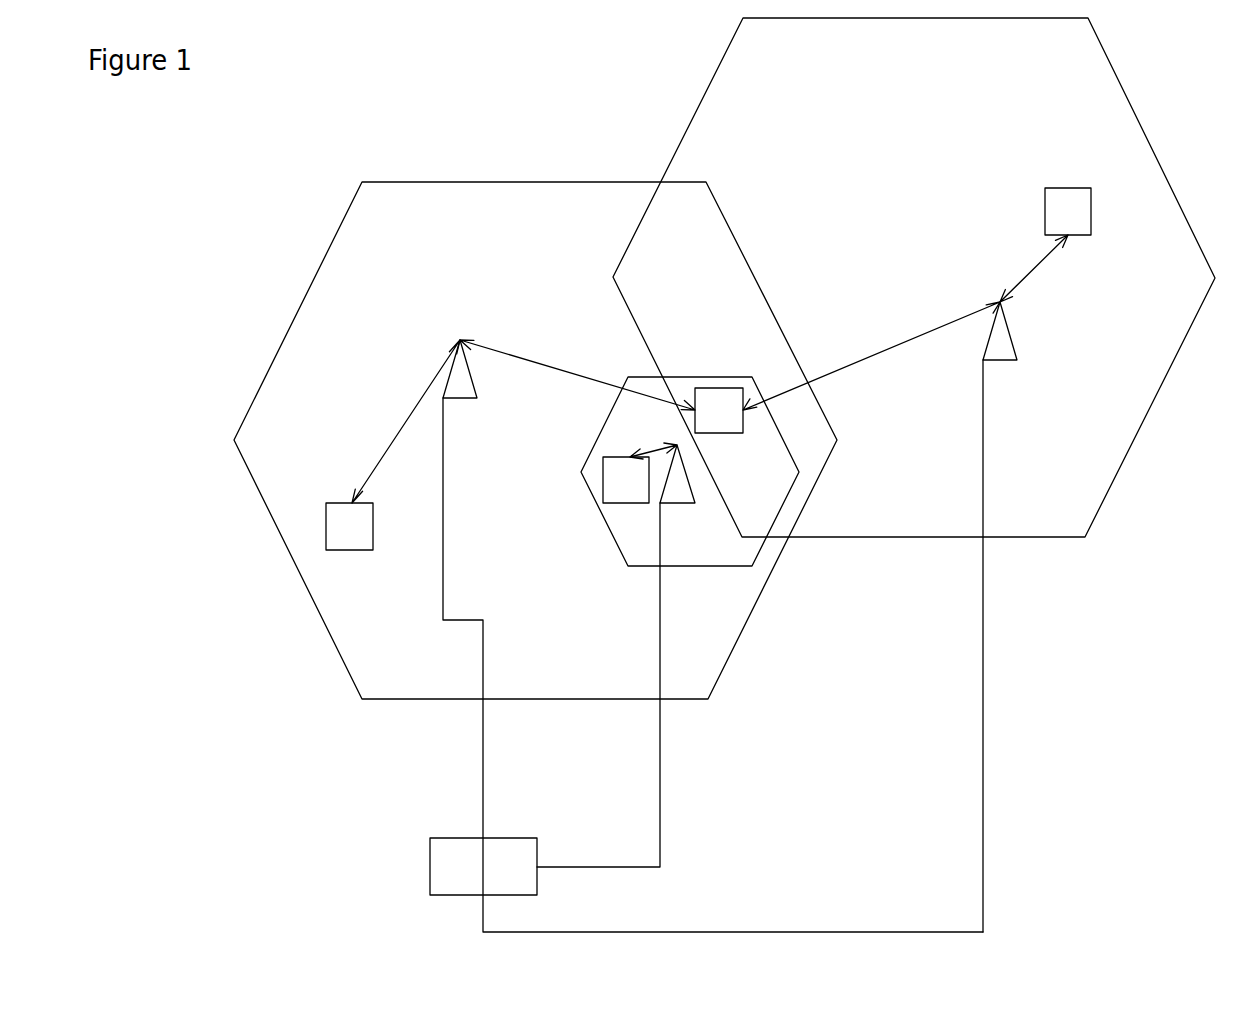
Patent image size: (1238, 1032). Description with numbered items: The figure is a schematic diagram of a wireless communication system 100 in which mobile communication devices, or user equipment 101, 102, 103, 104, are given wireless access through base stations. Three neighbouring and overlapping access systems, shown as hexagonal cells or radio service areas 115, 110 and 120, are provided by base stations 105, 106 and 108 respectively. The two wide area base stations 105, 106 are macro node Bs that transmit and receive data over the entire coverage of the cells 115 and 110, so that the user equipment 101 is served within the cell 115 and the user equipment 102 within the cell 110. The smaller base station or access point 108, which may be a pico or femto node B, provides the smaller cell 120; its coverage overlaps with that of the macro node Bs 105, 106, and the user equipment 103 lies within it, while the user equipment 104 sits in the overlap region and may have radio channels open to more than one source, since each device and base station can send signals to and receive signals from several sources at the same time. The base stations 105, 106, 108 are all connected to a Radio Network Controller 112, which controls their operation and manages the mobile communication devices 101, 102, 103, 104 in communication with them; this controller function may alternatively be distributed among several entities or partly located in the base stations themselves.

The wireless communication system 100 is at (268, 161).
The cell 110 is at (684, 84).
The cell 115 is at (250, 376).
The cell 120 is at (580, 440).
The base station 105 is at (453, 368).
The base station 106 is at (1010, 330).
The smaller base station 108 is at (687, 473).
The user equipment 101 is at (326, 527).
The user equipment 102 is at (1045, 212).
The user equipment 103 is at (625, 503).
The user equipment 104 is at (717, 388).
The Radio Network Controller 112 is at (430, 867).